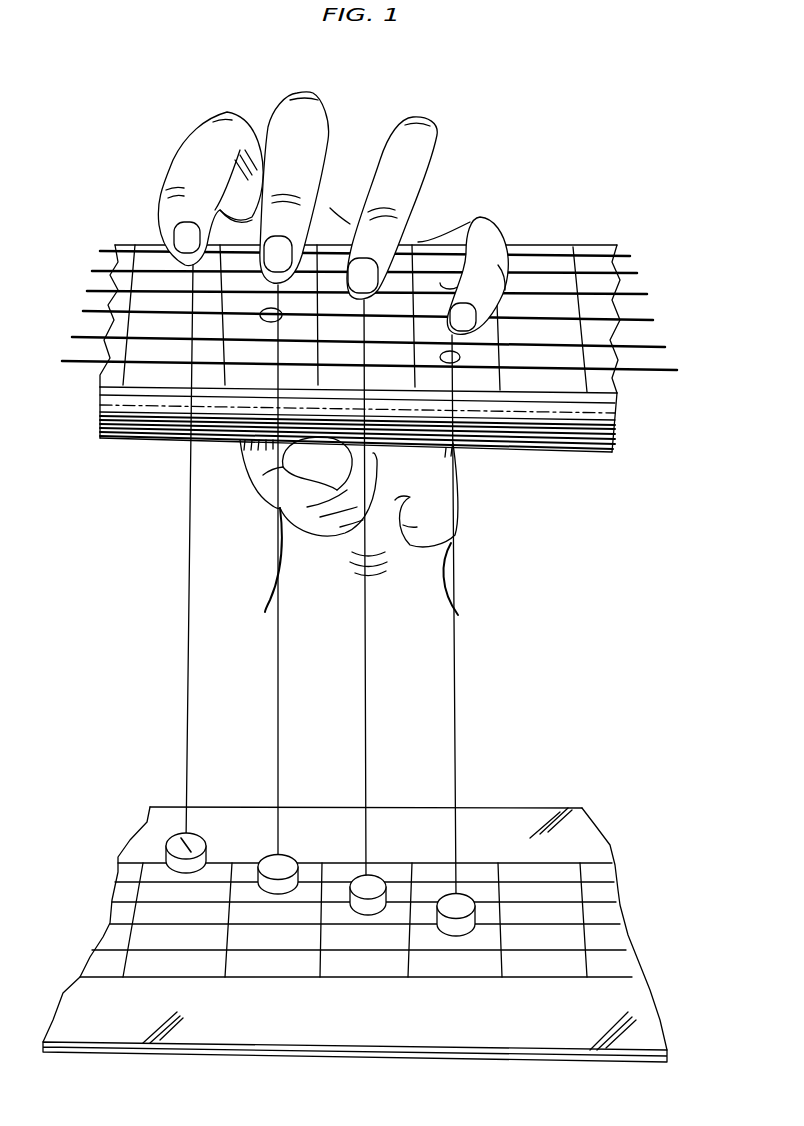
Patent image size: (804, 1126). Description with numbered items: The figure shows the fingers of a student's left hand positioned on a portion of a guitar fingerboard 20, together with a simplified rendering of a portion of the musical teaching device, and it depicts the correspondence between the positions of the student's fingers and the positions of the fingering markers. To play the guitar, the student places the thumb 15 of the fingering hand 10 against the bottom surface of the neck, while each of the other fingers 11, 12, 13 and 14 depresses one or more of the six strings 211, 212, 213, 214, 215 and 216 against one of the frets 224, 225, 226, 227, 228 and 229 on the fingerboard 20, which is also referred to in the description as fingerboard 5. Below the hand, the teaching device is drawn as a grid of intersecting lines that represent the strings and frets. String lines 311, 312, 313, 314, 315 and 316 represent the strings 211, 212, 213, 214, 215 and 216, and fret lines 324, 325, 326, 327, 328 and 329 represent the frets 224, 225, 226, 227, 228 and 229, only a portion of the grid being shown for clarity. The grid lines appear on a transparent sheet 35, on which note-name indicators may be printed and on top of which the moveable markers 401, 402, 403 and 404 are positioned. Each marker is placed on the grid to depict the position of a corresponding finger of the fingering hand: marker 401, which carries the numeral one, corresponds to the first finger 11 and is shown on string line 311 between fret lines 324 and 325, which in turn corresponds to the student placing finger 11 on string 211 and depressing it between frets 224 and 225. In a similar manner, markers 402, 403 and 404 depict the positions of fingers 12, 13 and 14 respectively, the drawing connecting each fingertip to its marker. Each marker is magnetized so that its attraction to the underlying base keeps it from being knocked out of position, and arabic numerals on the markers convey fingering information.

The fingerboard 5 is at (582, 448).
The fingering hand 10 is at (335, 343).
The first finger 11 is at (193, 142).
The finger 12 is at (318, 105).
The finger 13 is at (428, 135).
The finger 14 is at (498, 237).
The thumb 15 is at (262, 505).
The guitar fingerboard 20 is at (381, 305).
The string 211 is at (631, 255).
The string 212 is at (638, 273).
The string 213 is at (648, 294).
The string 214 is at (654, 320).
The string 215 is at (666, 347).
The string 216 is at (678, 370).
The fret 224 is at (124, 373).
The fret 225 is at (226, 373).
The fret 226 is at (319, 373).
The fret 227 is at (408, 373).
The fret 228 is at (502, 373).
The fret 229 is at (587, 391).
The transparent sheet 35 is at (542, 812).
The string line 311 is at (612, 863).
The string line 312 is at (614, 882).
The string line 313 is at (616, 902).
The string line 314 is at (620, 924).
The string line 315 is at (626, 950).
The string line 316 is at (632, 977).
The fret line 324 is at (123, 978).
The fret line 325 is at (225, 978).
The fret line 326 is at (320, 978).
The fret line 327 is at (408, 978).
The fret line 328 is at (502, 978).
The fret line 329 is at (587, 978).
The moveable marker 401 is at (200, 845).
The moveable marker 402 is at (285, 858).
The moveable marker 403 is at (373, 878).
The moveable marker 404 is at (463, 898).